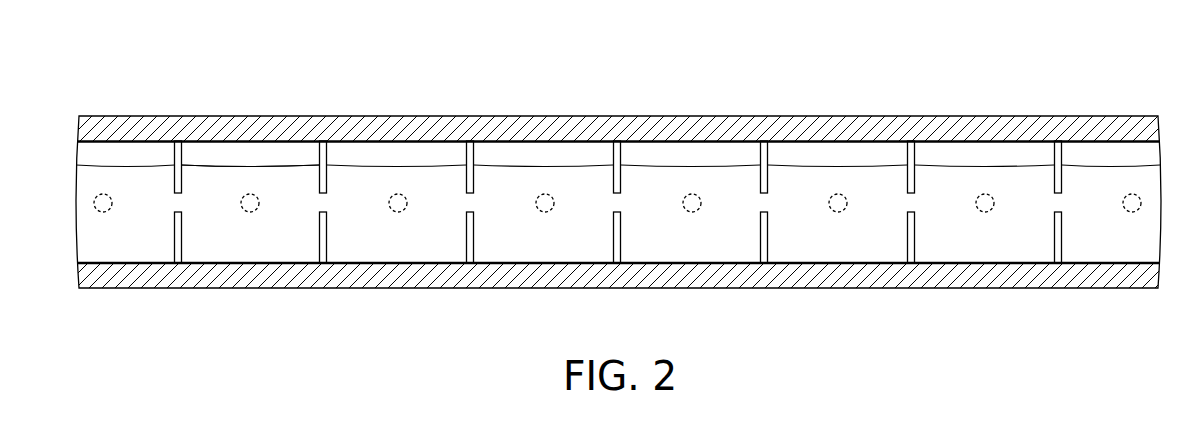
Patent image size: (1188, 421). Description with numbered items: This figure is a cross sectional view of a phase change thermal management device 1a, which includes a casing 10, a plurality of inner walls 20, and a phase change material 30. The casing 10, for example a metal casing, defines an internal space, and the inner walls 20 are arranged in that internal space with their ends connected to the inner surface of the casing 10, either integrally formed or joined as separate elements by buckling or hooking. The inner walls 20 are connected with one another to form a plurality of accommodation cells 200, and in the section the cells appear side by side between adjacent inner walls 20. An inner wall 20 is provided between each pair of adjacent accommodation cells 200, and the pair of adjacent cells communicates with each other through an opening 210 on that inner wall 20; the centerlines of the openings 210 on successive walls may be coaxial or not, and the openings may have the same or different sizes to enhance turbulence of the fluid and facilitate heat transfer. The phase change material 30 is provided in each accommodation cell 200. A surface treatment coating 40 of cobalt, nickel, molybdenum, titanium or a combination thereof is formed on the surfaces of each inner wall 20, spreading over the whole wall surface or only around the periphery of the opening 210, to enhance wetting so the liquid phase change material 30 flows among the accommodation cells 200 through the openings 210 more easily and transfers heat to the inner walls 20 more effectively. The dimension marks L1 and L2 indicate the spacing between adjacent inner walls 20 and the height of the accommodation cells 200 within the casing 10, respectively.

The phase change thermal management device 1a is at (128, 57).
The casing 10 is at (1108, 116).
The inner walls 20 is at (612, 160).
The accommodation cells 200 is at (420, 157).
The opening 210 is at (334, 205).
The phase change material 30 is at (378, 167).
The surface treatment coating 40 is at (250, 158).
The partition spacing L1 is at (911, 143).
The chamber height L2 is at (1018, 261).